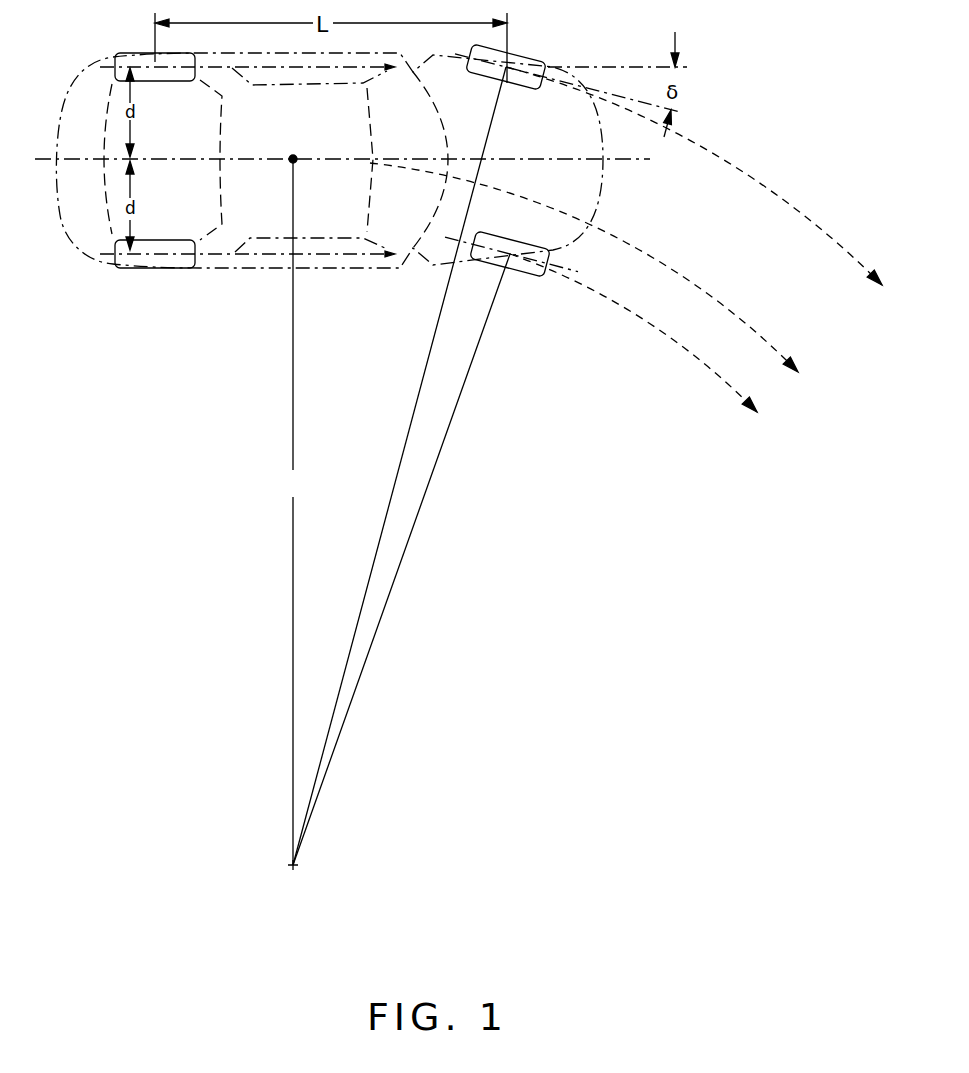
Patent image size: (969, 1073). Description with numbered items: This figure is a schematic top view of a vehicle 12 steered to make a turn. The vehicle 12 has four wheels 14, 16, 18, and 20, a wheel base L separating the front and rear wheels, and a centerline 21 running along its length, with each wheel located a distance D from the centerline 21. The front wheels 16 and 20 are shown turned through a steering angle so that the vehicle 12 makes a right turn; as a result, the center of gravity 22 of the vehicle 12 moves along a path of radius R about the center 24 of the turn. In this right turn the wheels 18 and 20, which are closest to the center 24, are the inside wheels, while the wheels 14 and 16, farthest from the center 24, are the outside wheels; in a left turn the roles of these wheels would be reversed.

The vehicle 12 is at (60, 120).
The wheel 14 is at (140, 52).
The wheel 16 is at (527, 62).
The wheel 18 is at (148, 268).
The wheel 20 is at (523, 272).
The centerline 21 is at (238, 162).
The center of gravity 22 is at (293, 157).
The center of the turn 24 is at (291, 862).